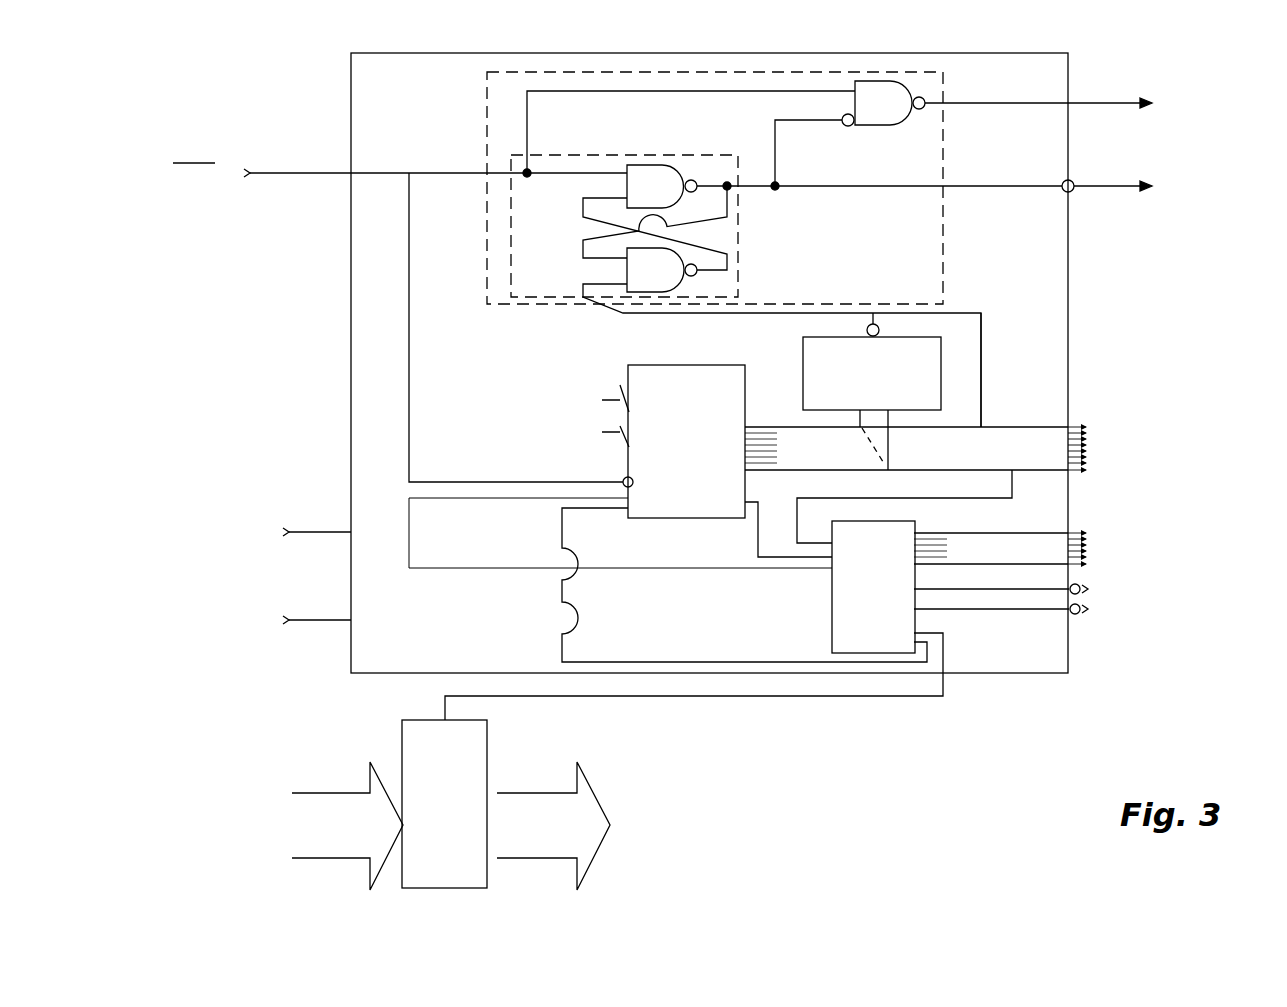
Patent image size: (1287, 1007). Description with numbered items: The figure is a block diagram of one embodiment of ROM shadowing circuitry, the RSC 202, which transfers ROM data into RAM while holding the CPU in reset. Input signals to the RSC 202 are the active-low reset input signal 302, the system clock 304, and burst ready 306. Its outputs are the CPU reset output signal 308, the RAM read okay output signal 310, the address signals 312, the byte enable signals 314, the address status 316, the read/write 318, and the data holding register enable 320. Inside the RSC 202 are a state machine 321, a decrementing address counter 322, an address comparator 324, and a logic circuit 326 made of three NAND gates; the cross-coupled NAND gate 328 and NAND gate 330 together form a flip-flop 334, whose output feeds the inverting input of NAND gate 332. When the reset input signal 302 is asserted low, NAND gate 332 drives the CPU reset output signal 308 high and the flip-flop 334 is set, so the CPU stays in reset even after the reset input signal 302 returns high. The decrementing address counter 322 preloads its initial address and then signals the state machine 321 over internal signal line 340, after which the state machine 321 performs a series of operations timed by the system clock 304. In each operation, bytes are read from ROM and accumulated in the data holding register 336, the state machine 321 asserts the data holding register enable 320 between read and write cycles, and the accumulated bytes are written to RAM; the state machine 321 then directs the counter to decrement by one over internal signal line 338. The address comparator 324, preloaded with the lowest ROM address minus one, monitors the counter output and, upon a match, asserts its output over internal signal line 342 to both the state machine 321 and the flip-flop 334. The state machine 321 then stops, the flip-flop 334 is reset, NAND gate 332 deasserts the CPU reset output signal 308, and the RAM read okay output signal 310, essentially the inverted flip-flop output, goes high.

The RSC 202 is at (345, 94).
The reset input signal 302 is at (351, 173).
The system clock 304 is at (351, 532).
The burst ready 306 is at (351, 620).
The CPU reset output signal 308 is at (1068, 101).
The RAM read okay output signal 310 is at (1072, 180).
The address signals 312 is at (1127, 452).
The byte enable signals 314 is at (1128, 547).
The address status 316 is at (1142, 590).
The read/write 318 is at (1170, 610).
The data holding register enable 320 is at (1015, 690).
The state machine 321 is at (832, 562).
The decrementing address counter 322 is at (645, 365).
The address comparator 324 is at (803, 360).
The logic circuit 326 is at (943, 237).
The NAND gate 328 is at (598, 228).
The NAND gate 330 is at (680, 160).
The NAND gate 332 is at (893, 130).
The flip-flop 334 is at (738, 238).
The data holding register 336 is at (487, 760).
The internal signal line 338 is at (630, 662).
The internal signal line 340 is at (758, 535).
The internal signal line 342 is at (981, 362).